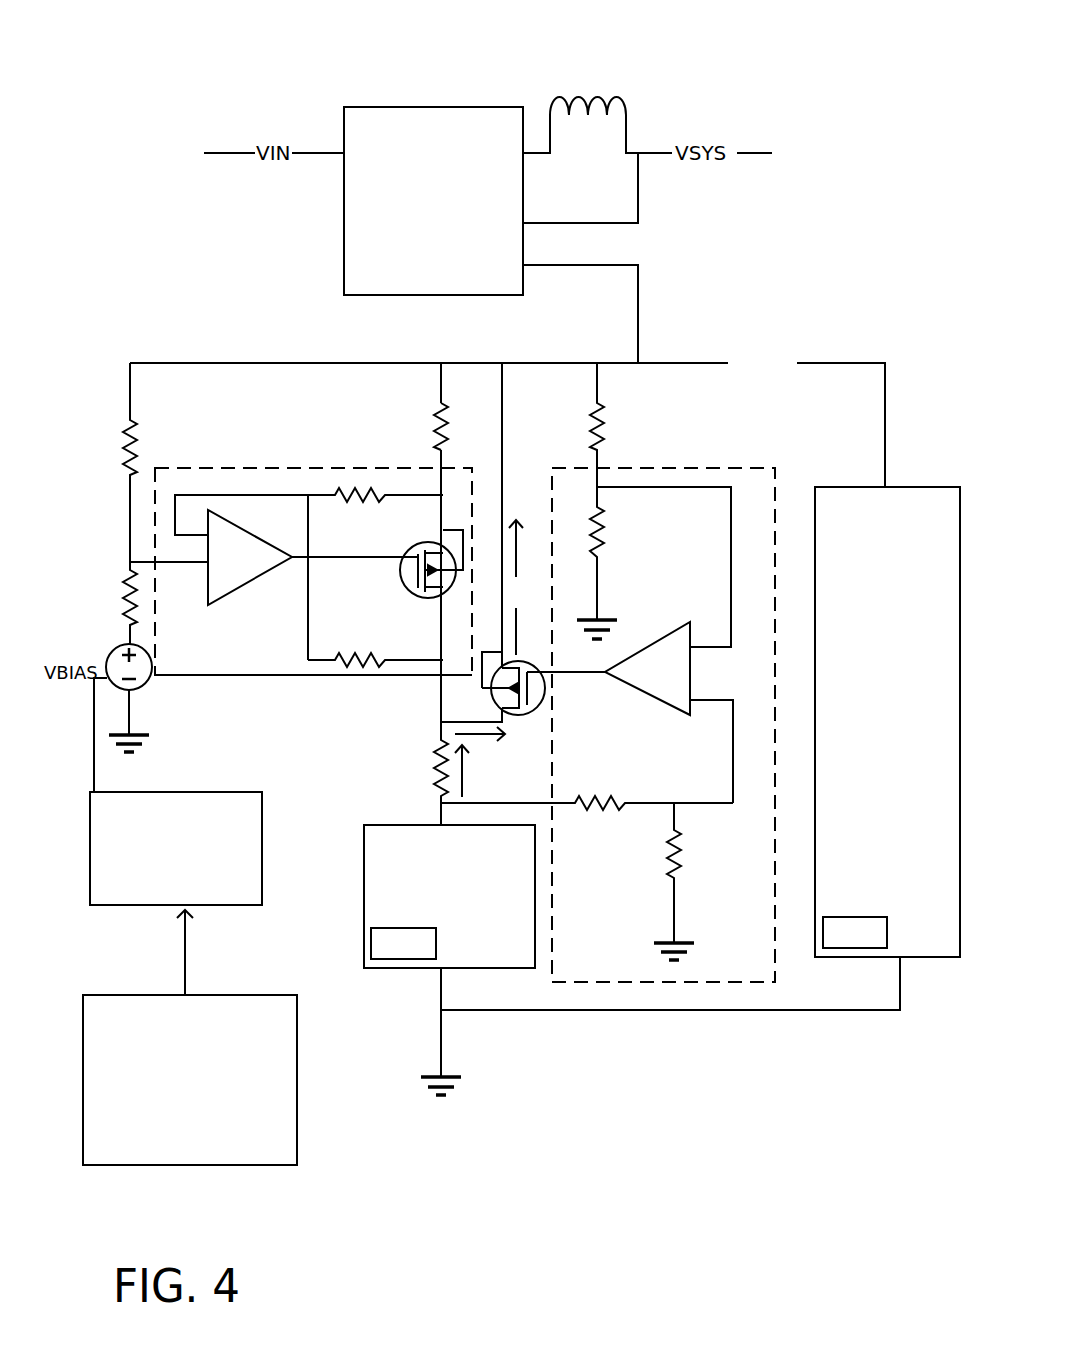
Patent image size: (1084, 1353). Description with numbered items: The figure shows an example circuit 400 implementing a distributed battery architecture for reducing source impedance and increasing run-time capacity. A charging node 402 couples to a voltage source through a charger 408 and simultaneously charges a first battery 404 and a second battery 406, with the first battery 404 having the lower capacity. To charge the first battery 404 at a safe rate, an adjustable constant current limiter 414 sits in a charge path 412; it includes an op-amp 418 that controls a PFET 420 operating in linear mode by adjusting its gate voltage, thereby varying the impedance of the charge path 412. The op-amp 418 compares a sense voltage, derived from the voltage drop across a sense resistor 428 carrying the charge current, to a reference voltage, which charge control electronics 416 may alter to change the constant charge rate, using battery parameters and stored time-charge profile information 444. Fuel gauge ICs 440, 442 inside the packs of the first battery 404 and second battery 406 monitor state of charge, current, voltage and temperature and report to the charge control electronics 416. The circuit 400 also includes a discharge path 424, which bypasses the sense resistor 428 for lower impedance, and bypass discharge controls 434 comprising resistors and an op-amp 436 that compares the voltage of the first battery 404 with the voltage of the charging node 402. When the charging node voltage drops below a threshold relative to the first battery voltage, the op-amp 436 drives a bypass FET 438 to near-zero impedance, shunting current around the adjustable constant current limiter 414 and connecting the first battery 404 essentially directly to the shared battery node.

The example circuit 400 is at (740, 68).
The charging node 402 is at (638, 360).
The first battery 404 is at (449, 896).
The second battery 406 is at (887, 722).
The charger 408 is at (433, 201).
The charge path 412 is at (443, 480).
The adjustable constant current limiter 414 is at (288, 675).
The charge control electronics 416 is at (176, 848).
The op-amp 418 is at (225, 557).
The PFET 420 is at (405, 585).
The discharge path 424 is at (502, 455).
The sense resistor 428 is at (440, 430).
The bypass discharge controls 434 is at (730, 467).
The op-amp 436 is at (663, 674).
The bypass FET 438 is at (545, 713).
The fuel gauge IC 440 is at (403, 943).
The fuel gauge IC 442 is at (855, 932).
The stored time-charge profile information 444 is at (190, 1080).